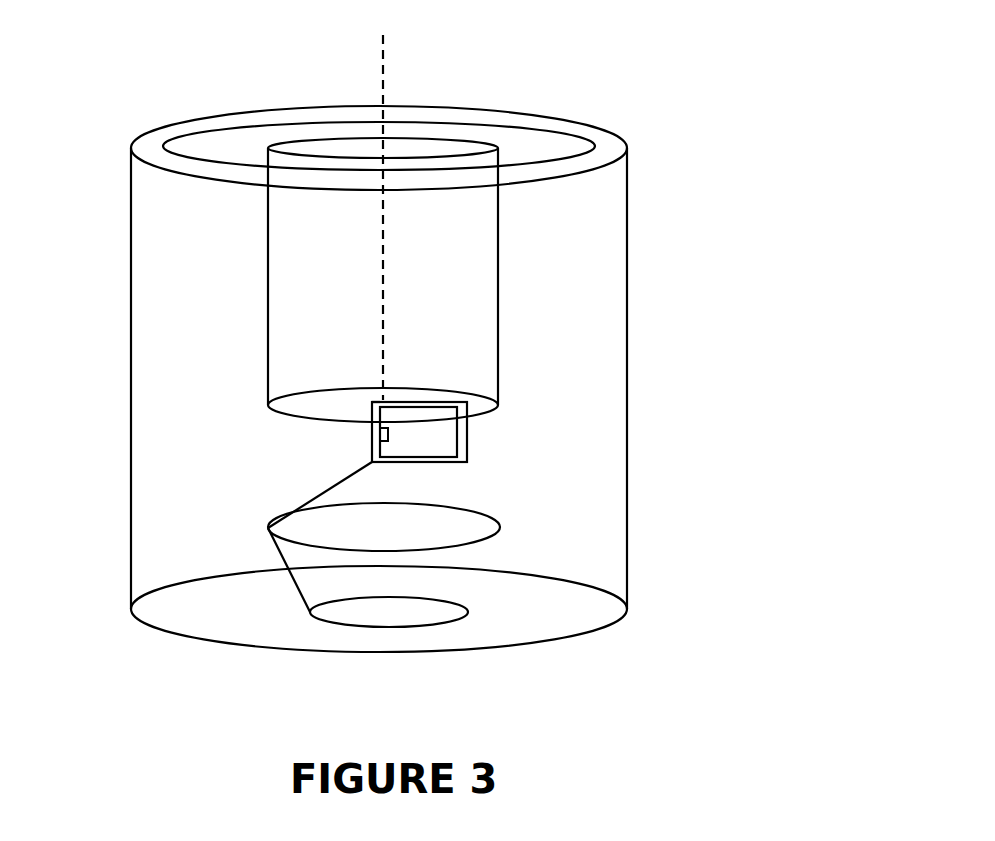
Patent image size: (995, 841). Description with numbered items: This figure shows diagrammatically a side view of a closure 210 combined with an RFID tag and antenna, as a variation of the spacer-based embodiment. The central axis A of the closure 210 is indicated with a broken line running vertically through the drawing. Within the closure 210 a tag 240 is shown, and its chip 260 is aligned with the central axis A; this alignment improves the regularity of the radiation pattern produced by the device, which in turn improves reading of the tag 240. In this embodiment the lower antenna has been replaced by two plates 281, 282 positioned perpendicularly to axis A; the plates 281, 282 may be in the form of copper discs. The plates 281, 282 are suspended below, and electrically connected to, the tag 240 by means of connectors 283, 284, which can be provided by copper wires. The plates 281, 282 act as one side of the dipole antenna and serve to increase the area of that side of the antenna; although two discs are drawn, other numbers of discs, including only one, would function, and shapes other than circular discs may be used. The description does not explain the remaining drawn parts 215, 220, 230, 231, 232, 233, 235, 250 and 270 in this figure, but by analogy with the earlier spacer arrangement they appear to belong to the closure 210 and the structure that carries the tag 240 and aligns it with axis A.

The central axis A is at (385, 78).
The closure 210 is at (648, 355).
The annular chamber 215 is at (228, 362).
The outer housing wall 220 is at (627, 478).
The outer housing 230 is at (613, 150).
The inner rim of housing 231 is at (237, 215).
The top of inner tube 232 is at (485, 143).
The inner tube wall 233 is at (500, 275).
The bottom of inner tube 235 is at (317, 412).
The tag 240 is at (488, 435).
The valve seat 250 is at (468, 463).
The chip 260 is at (375, 438).
The valve inlet 270 is at (378, 400).
The plate 281 is at (498, 536).
The plate 282 is at (457, 622).
The connector 283 is at (325, 490).
The connector 284 is at (293, 592).